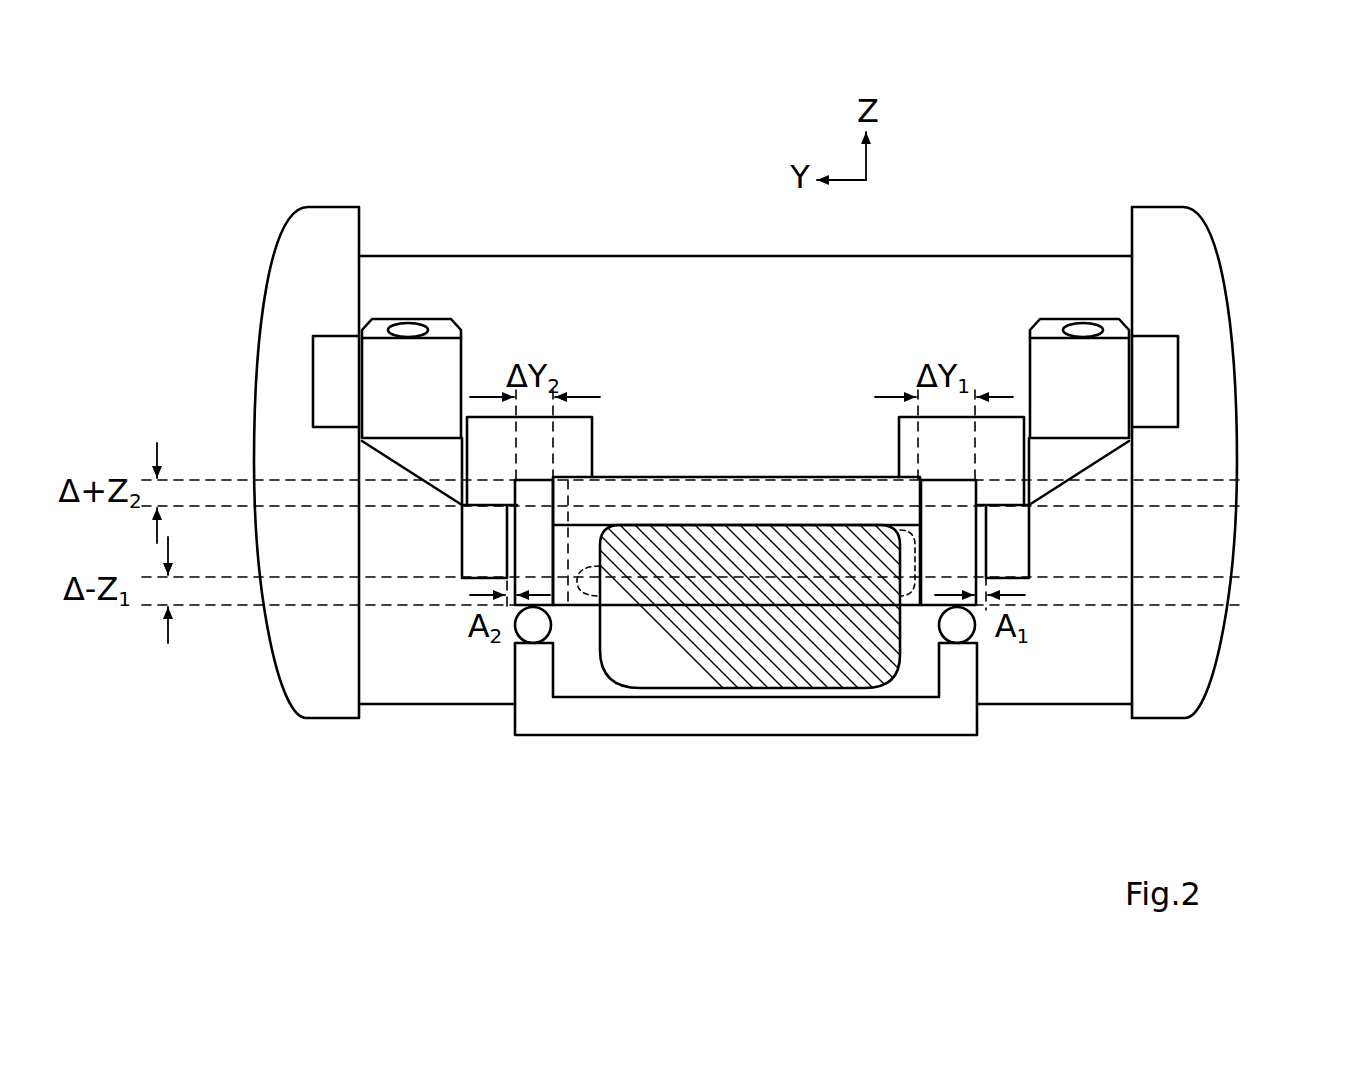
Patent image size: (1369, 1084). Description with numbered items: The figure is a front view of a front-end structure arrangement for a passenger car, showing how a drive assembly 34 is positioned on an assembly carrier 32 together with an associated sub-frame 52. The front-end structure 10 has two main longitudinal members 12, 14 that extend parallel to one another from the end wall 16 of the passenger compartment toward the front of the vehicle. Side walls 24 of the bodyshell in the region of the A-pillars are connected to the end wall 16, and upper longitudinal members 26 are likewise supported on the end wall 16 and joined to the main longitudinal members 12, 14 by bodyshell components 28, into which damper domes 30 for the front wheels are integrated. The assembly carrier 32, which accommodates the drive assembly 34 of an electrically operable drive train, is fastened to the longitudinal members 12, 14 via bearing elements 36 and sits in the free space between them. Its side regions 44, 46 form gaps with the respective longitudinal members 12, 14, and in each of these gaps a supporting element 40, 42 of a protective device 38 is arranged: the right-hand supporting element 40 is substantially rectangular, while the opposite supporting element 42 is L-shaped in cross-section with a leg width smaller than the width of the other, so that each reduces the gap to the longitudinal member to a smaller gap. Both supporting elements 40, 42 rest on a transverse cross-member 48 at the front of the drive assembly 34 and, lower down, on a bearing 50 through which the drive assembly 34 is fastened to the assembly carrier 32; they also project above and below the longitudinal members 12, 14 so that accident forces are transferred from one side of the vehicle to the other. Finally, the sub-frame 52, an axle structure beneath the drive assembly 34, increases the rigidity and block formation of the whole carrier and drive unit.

The front-end structure 10 is at (1250, 183).
The longitudinal member 12 is at (1013, 547).
The longitudinal member 14 is at (475, 547).
The end wall 16 is at (608, 290).
The side wall 24 is at (255, 450).
The upper longitudinal member 26 is at (327, 382).
The bodyshell component 28 is at (388, 380).
The damper dome 30 is at (438, 328).
The assembly carrier 32 is at (786, 435).
The drive assembly 34 is at (727, 670).
The bearing element 36 is at (578, 453).
The protective device 38 is at (682, 765).
The supporting element 40 is at (953, 530).
The supporting element 42 is at (535, 530).
The side region 44 is at (990, 568).
The side region 46 is at (475, 563).
The cross-member 48 is at (762, 497).
The bearing 50 is at (580, 605).
The sub-frame 52 is at (845, 705).